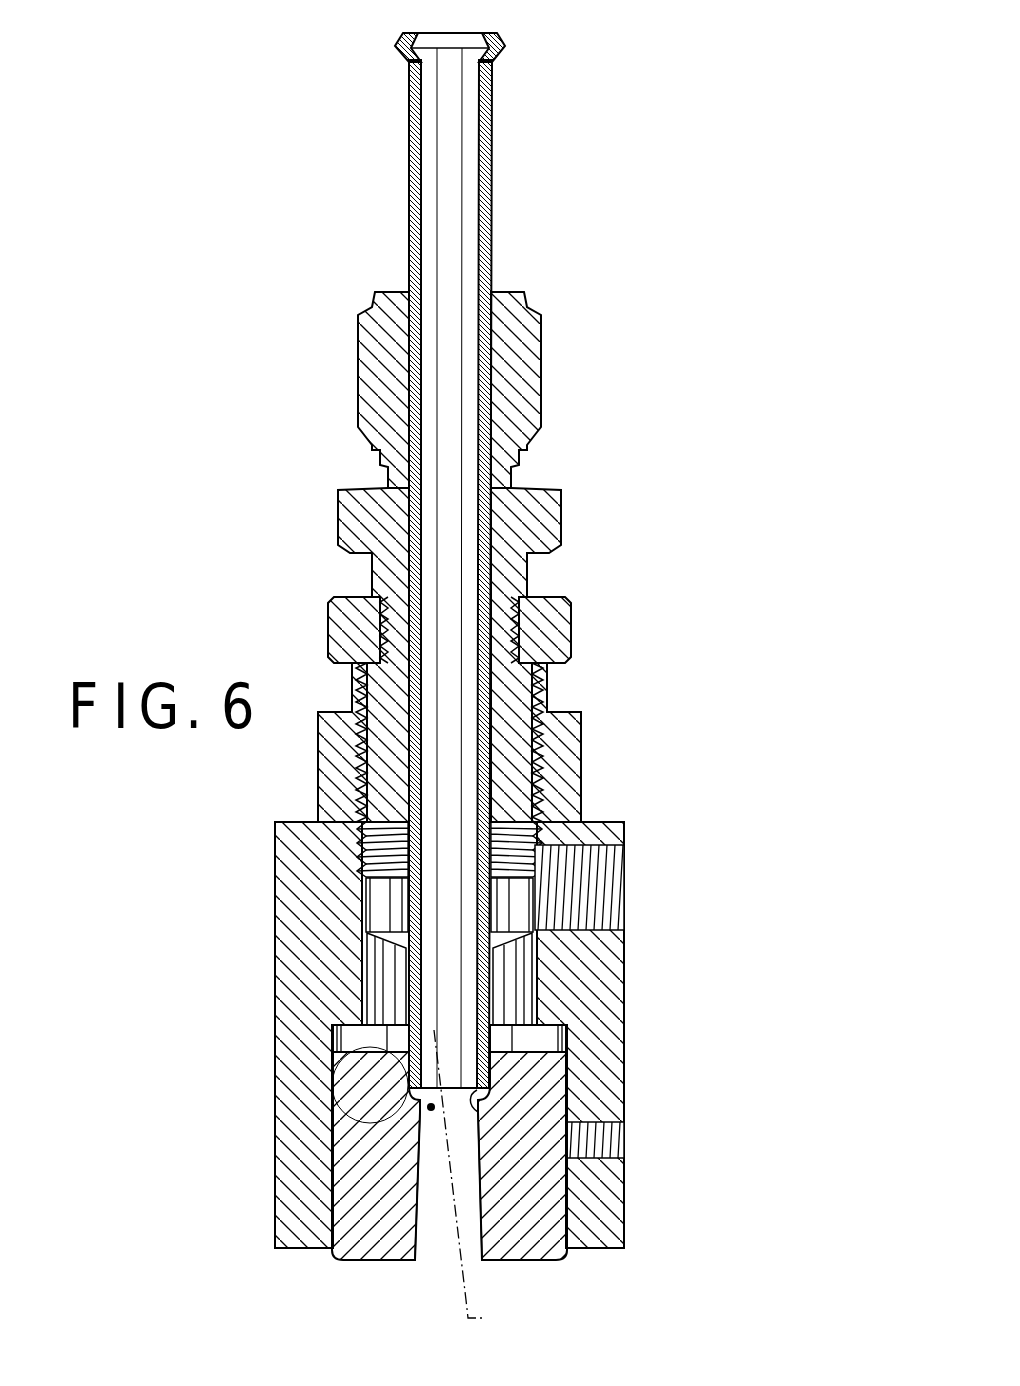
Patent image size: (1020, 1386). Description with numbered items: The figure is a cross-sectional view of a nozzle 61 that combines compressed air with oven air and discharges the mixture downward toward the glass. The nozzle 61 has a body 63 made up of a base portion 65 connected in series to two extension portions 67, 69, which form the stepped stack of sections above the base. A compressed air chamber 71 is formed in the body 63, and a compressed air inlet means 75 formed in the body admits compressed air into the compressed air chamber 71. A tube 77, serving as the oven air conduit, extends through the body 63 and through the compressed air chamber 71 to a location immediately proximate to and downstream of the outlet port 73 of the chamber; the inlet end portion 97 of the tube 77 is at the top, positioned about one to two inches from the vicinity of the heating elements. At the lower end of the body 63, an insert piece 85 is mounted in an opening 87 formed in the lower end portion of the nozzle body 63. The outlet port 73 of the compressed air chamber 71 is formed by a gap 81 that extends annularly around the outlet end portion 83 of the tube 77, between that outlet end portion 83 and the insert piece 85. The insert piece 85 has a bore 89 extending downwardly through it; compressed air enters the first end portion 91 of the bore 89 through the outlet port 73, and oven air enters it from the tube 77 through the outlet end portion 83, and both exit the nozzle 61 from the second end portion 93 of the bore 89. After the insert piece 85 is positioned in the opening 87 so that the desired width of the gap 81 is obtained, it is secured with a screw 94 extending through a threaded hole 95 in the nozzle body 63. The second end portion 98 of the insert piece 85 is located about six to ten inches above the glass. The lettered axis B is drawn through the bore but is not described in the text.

The inlet end portion 97 is at (427, 34).
The tube 77 is at (497, 180).
The nozzle 61 is at (562, 291).
The extension portion 69 is at (541, 395).
The extension portion 67 is at (566, 607).
The body 63 is at (622, 789).
The compressed air chamber 71 is at (507, 907).
The compressed air inlet means 75 is at (608, 898).
The base portion 65 is at (624, 1042).
The first end portion 91 is at (403, 1025).
The opening 87 is at (390, 1048).
The outlet end portion 83 is at (466, 1065).
The gap 81 is at (368, 1075).
The insert piece 85 is at (370, 1150).
The outlet port 73 is at (482, 1116).
The screw 94 is at (624, 1133).
The threaded hole 95 is at (621, 1180).
The bore 89 is at (437, 1185).
The second end portion 93 is at (428, 1262).
The second end portion 98 is at (523, 1260).
The axis B is at (467, 1183).